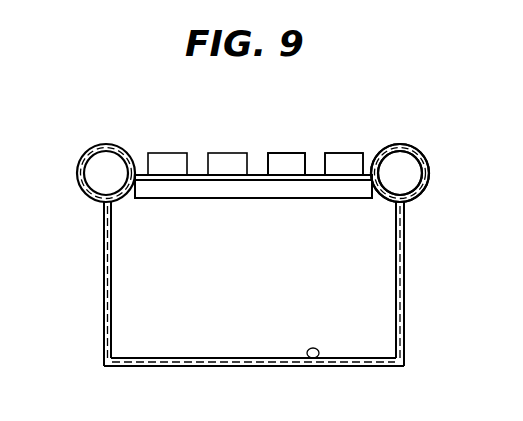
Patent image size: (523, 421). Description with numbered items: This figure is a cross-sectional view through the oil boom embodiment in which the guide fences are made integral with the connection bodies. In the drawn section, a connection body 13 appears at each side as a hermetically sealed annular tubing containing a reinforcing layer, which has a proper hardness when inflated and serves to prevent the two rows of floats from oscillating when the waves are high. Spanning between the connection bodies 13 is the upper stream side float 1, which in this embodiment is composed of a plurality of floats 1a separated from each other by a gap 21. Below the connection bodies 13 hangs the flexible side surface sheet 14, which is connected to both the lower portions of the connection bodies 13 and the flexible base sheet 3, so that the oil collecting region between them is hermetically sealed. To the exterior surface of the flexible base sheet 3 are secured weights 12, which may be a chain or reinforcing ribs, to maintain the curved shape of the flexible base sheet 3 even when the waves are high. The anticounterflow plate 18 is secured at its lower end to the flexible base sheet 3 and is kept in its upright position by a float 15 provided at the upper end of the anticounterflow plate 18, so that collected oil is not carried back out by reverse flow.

The upper stream side float 1 is at (306, 149).
The float 1a is at (307, 154).
The gap 21 is at (257, 163).
The connection body 13 is at (82, 188).
The float 15 is at (371, 160).
The anticounterflow plate 18 is at (360, 188).
The flexible side surface sheet 14 is at (405, 262).
The weight 12 is at (360, 365).
The flexible base sheet 3 is at (311, 359).